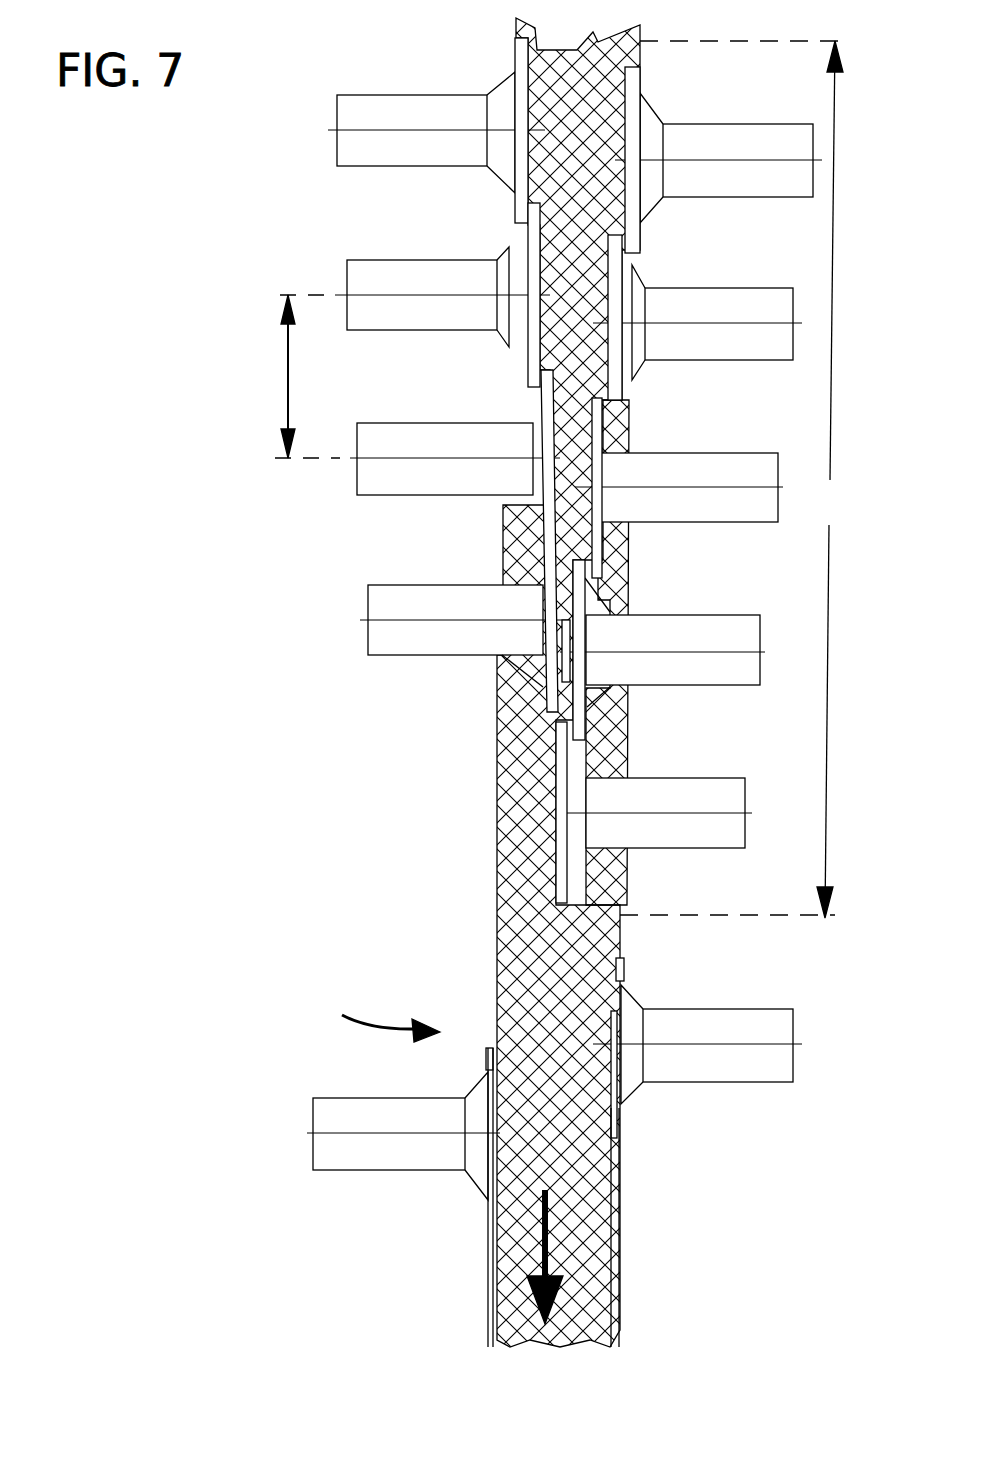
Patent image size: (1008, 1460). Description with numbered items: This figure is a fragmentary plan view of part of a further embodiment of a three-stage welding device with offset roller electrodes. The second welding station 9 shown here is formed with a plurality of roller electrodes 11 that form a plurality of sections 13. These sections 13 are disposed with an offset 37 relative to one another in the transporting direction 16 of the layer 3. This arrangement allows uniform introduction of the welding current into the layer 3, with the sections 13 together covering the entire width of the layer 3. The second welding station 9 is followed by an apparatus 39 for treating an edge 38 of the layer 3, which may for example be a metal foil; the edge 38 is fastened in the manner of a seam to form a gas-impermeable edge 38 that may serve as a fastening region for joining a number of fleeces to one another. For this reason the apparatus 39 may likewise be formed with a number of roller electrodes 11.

The layer 3 is at (503, 548).
The second welding station 9 is at (731, 479).
The roller electrodes 11 is at (420, 643).
The sections 13 is at (532, 252).
The transporting direction 16 is at (544, 1229).
The offset 37 is at (288, 373).
The edge 38 is at (615, 1293).
The apparatus for treating an edge 39 is at (360, 1016).